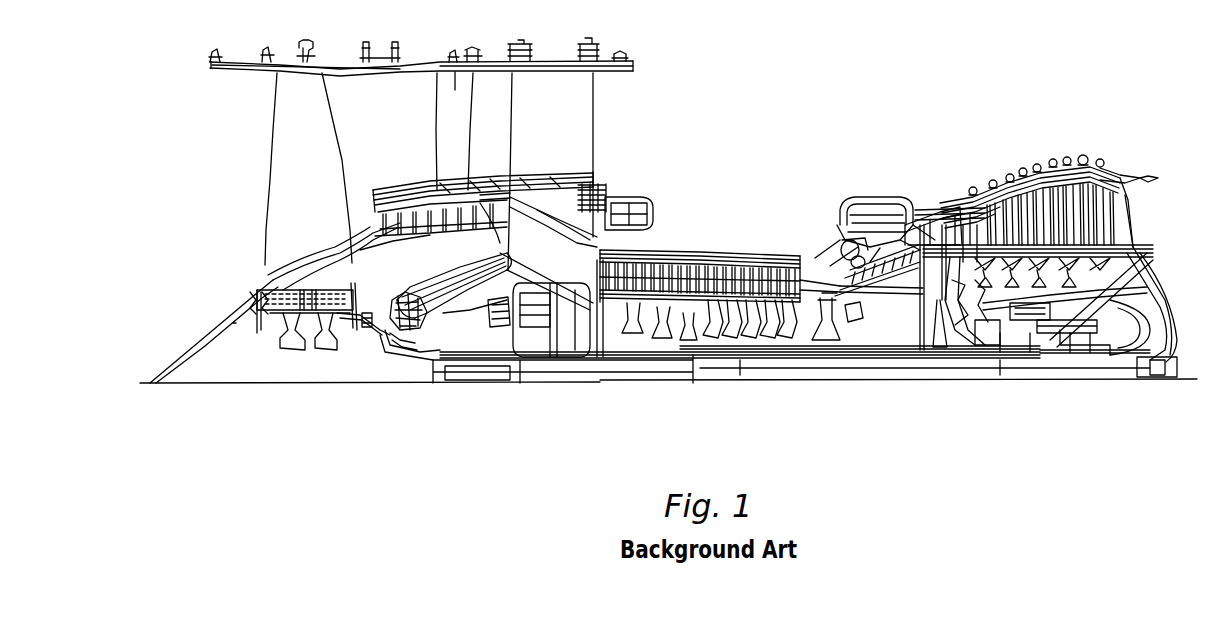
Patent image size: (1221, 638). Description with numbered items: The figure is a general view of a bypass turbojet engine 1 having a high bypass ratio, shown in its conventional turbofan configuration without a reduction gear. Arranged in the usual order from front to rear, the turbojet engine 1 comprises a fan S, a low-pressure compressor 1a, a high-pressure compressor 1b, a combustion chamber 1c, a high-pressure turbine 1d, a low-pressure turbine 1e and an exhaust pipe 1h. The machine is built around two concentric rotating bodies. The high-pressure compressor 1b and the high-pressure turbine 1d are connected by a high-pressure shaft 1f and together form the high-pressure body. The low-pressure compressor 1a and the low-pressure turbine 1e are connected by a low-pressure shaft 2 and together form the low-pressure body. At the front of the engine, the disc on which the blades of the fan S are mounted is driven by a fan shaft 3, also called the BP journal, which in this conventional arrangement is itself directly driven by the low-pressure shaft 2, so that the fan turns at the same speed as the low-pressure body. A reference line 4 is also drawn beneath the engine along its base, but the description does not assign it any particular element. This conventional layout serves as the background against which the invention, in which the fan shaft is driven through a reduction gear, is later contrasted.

The turbojet engine 1 is at (742, 138).
The low-pressure compressor 1a is at (401, 182).
The high-pressure compressor 1b is at (689, 258).
The combustion chamber 1c is at (877, 195).
The high-pressure turbine 1d is at (936, 195).
The low-pressure turbine 1e is at (1036, 160).
The high-pressure shaft 1f is at (783, 350).
The exhaust pipe 1h is at (1120, 172).
The low-pressure shaft 2 is at (722, 378).
The fan shaft 3 is at (397, 343).
The floor 4 is at (222, 386).
The fan S is at (290, 148).